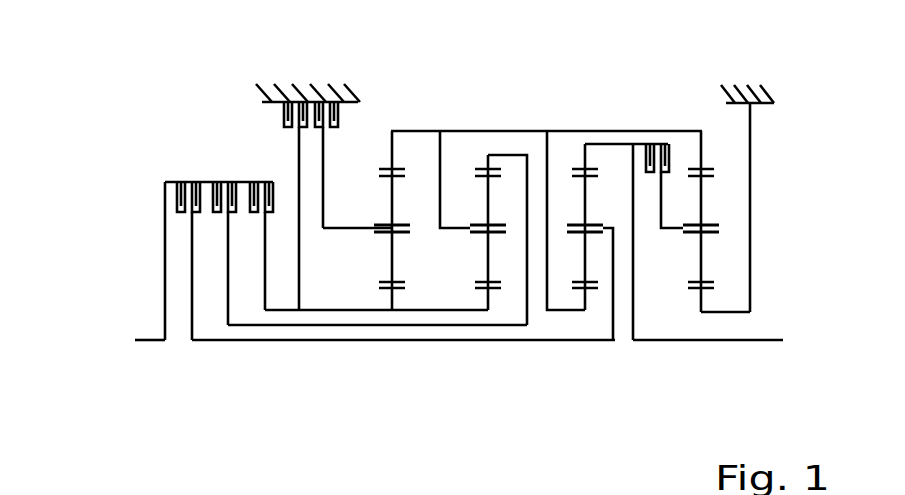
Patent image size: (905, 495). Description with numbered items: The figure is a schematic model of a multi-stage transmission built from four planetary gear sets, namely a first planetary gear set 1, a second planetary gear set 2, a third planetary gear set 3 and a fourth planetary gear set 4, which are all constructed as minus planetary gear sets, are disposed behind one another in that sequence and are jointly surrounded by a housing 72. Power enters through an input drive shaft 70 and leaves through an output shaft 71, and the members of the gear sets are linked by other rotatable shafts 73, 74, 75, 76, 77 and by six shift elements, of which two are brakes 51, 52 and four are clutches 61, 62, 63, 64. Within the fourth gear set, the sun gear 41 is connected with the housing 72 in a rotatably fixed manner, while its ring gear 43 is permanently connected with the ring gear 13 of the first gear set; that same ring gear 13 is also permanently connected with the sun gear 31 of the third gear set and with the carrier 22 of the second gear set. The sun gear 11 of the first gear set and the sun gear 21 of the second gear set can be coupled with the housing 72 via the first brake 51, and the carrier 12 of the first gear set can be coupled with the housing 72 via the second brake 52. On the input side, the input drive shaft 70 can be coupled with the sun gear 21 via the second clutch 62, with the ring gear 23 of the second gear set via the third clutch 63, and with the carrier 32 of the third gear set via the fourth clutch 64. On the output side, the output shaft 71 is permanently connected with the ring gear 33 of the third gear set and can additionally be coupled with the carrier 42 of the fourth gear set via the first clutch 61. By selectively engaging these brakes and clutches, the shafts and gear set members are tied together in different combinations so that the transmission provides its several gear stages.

The first planetary gear set 1 is at (392, 345).
The second planetary gear set 2 is at (488, 345).
The third planetary gear set 3 is at (585, 345).
The fourth planetary gear set 4 is at (700, 345).
The sun gear of the first planetary gear set 11 is at (387, 284).
The carrier of the first planetary gear set 12 is at (350, 232).
The ring gear of the first planetary gear set 13 is at (383, 166).
The sun gear of the second planetary gear set 21 is at (480, 284).
The carrier of the second planetary gear set 22 is at (458, 224).
The ring gear of the second planetary gear set 23 is at (497, 154).
The sun gear of the third planetary gear set 31 is at (578, 287).
The carrier of the third planetary gear set 32 is at (607, 232).
The ring gear of the third planetary gear set 33 is at (580, 167).
The sun gear of the fourth planetary gear set 41 is at (705, 289).
The carrier of the fourth planetary gear set 42 is at (675, 230).
The ring gear of the fourth planetary gear set 43 is at (707, 167).
The first brake 51 is at (278, 112).
The second brake 52 is at (346, 100).
The first clutch 61 is at (653, 145).
The second clutch 62 is at (250, 183).
The third clutch 63 is at (203, 181).
The fourth clutch 64 is at (165, 197).
The input drive shaft 70 is at (150, 343).
The output shaft 71 is at (753, 342).
The housing 72 is at (297, 98).
The rotatable shaft 73 is at (321, 203).
The rotatable shaft 74 is at (535, 130).
The rotatable shaft 75 is at (300, 277).
The rotatable shaft 76 is at (512, 327).
The rotatable shaft 77 is at (227, 343).